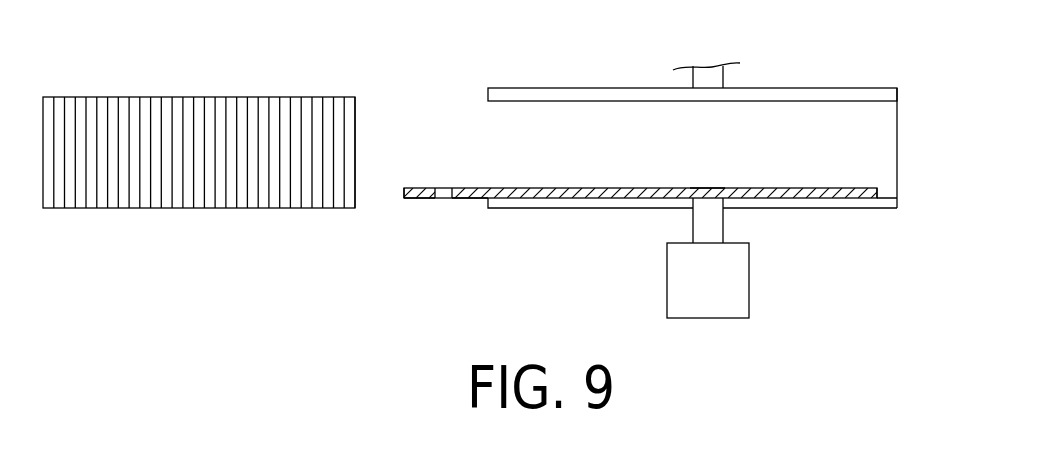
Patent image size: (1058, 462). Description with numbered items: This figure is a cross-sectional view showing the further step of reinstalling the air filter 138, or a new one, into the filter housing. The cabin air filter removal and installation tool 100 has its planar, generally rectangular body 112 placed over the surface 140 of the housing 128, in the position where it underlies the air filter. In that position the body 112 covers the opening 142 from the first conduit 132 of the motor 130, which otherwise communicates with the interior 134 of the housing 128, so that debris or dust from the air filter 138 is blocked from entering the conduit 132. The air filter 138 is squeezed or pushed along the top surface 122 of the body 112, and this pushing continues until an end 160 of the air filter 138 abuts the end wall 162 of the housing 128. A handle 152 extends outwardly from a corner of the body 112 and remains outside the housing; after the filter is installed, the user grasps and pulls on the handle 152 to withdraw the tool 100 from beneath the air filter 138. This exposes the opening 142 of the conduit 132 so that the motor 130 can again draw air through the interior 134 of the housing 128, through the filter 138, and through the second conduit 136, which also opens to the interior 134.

The cabin air filter removal and installation tool 100 is at (442, 188).
The body 112 is at (477, 198).
The top surface 122 is at (705, 188).
The housing 128 is at (855, 208).
The motor 130 is at (738, 283).
The first conduit 132 is at (723, 218).
The interior 134 is at (888, 120).
The second conduit 136 is at (717, 78).
The air filter 138 is at (280, 96).
The surface 140 is at (888, 195).
The opening 142 is at (703, 203).
The handle 152 is at (418, 198).
The end 160 is at (355, 135).
The end wall 162 is at (896, 149).